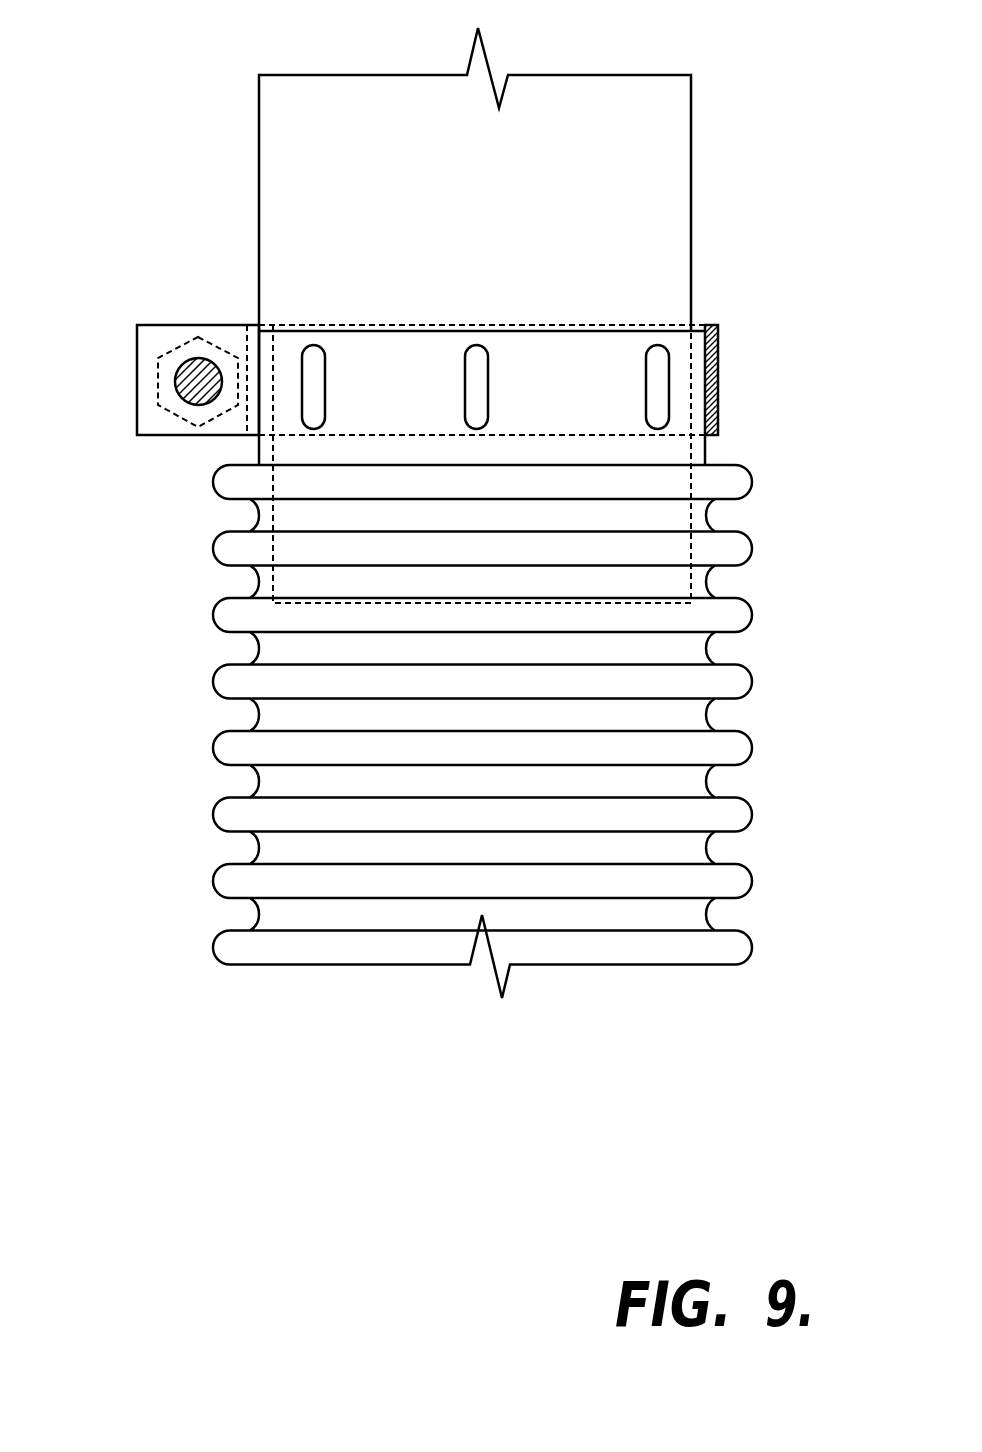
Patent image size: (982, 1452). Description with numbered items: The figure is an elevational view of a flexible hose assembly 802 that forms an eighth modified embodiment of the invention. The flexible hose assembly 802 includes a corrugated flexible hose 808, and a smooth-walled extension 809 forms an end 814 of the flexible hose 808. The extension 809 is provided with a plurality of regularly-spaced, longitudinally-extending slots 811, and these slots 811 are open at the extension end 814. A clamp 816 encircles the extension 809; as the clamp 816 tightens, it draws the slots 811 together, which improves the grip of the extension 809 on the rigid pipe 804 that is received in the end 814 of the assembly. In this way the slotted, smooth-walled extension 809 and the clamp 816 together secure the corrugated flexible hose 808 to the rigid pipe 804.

The flexible hose assembly 802 is at (180, 178).
The rigid pipe 804 is at (691, 75).
The corrugated flexible hose 808 is at (740, 963).
The smooth-walled extension 809 is at (606, 411).
The slots 811 is at (467, 370).
The extension end 814 is at (498, 331).
The clamp 816 is at (744, 323).